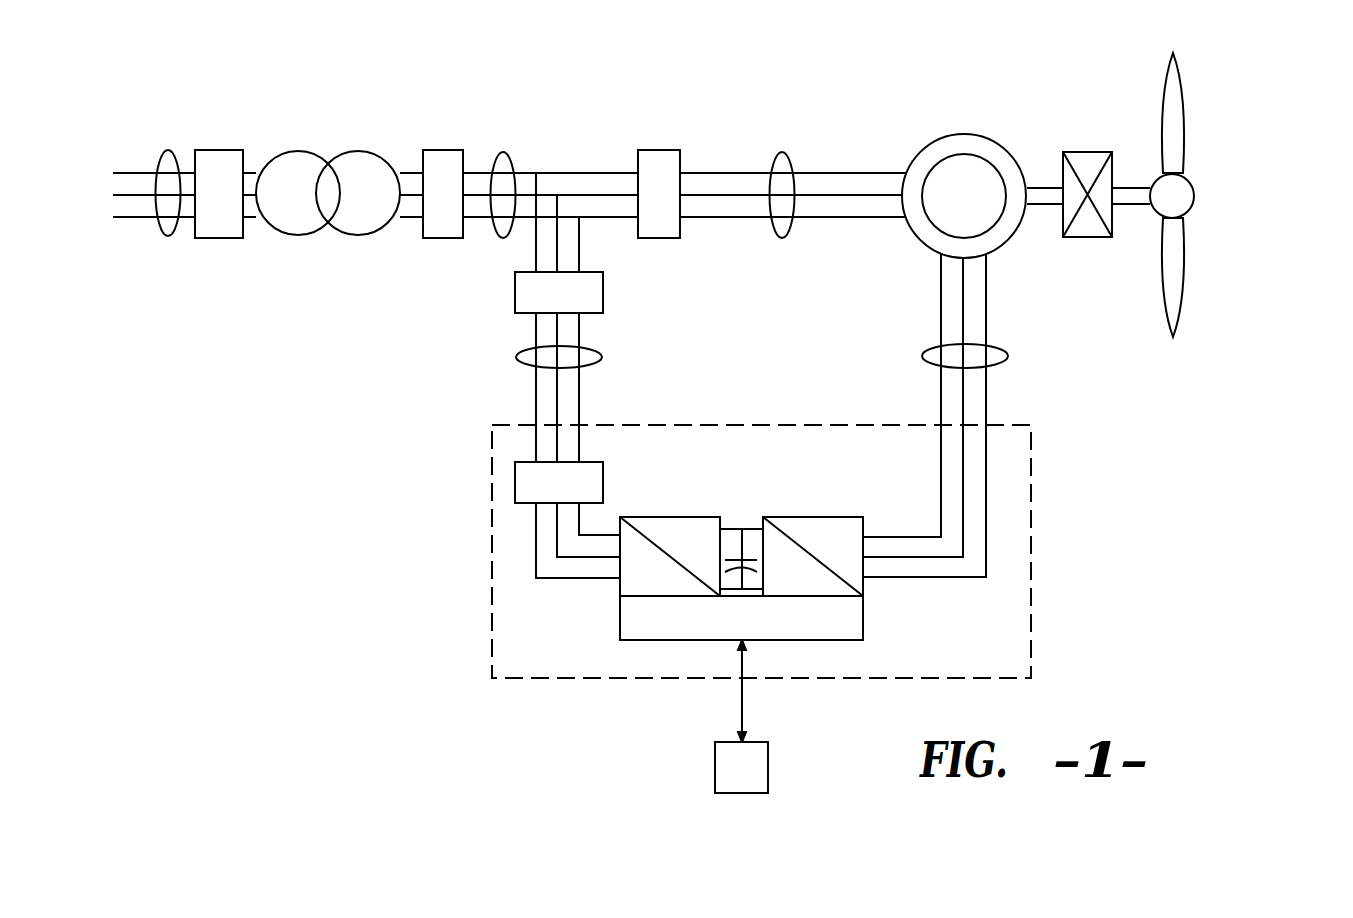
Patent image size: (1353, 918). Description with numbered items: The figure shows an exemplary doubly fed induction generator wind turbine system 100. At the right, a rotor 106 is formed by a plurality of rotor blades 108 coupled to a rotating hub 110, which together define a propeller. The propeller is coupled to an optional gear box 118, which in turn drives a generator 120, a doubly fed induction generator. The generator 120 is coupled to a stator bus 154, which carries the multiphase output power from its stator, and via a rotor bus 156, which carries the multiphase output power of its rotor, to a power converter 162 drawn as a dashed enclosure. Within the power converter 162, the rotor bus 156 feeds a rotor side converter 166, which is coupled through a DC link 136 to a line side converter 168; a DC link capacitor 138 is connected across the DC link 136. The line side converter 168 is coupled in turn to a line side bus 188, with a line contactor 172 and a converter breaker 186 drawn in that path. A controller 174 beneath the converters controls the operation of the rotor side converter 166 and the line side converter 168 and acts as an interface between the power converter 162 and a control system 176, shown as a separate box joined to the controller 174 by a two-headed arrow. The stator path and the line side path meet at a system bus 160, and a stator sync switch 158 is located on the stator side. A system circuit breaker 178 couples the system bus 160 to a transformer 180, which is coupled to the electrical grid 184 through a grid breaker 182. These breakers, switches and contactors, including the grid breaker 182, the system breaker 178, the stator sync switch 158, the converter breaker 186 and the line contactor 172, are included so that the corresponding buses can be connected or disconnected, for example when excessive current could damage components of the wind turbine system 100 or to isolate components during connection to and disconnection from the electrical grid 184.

The wind turbine system 100 is at (328, 573).
The rotor 106 is at (1258, 73).
The rotor blades 108 is at (1205, 208).
The rotating hub 110 is at (1200, 209).
The gear box 118 is at (1095, 165).
The generator 120 is at (964, 165).
The DC link 136 is at (771, 517).
The DC link capacitor 138 is at (752, 510).
The stator bus 154 is at (794, 164).
The rotor bus 156 is at (987, 336).
The stator sync switch 158 is at (667, 164).
The system bus 160 is at (515, 164).
The power converter 162 is at (795, 551).
The rotor side converter 166 is at (842, 582).
The line side converter 168 is at (638, 582).
The line contactor 172 is at (520, 461).
The controller 174 is at (725, 663).
The control system 176 is at (771, 751).
The system circuit breaker 178 is at (450, 164).
The transformer 180 is at (328, 162).
The grid breaker 182 is at (225, 164).
The electrical grid 184 is at (180, 163).
The converter breaker 186 is at (530, 282).
The line side bus 188 is at (524, 347).